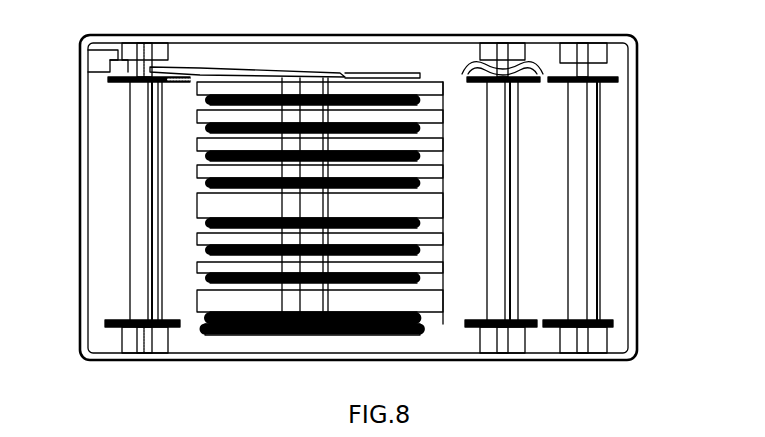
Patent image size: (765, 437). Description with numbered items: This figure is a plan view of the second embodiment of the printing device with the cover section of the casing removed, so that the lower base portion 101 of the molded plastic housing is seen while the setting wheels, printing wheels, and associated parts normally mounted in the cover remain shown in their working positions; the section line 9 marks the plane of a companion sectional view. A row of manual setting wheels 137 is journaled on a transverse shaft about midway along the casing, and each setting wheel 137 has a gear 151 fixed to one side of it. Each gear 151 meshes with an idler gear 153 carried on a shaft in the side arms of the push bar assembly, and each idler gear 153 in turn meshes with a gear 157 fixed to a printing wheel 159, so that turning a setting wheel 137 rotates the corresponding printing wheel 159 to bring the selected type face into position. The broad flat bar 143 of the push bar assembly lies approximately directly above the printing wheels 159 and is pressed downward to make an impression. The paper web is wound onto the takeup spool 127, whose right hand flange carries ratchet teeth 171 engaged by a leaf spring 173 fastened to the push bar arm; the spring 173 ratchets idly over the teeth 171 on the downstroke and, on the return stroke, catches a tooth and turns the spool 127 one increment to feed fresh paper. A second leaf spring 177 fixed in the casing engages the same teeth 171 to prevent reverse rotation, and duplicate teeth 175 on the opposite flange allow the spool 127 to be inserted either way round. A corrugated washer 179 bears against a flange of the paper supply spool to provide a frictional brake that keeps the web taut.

The section line 9- 9 is at (65, 332).
The base portion 101 is at (280, 355).
The takeup spool 127 is at (140, 178).
The manual setting wheels 137 is at (442, 322).
The flat bar 143 is at (243, 337).
The gear 151 is at (378, 335).
The idler gear 153 is at (322, 335).
The gear 157 is at (262, 330).
The printing wheel 159 is at (196, 330).
The ratchet teeth 171 is at (140, 80).
The leaf spring 173 is at (200, 66).
The teeth 175 is at (170, 330).
The second leaf spring 177 is at (106, 58).
The corrugated washer 179 is at (470, 60).